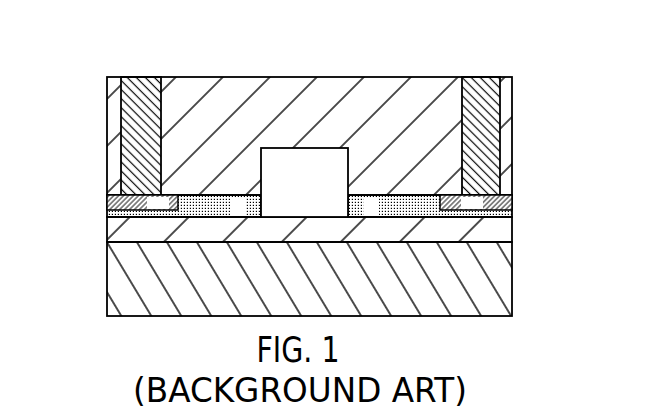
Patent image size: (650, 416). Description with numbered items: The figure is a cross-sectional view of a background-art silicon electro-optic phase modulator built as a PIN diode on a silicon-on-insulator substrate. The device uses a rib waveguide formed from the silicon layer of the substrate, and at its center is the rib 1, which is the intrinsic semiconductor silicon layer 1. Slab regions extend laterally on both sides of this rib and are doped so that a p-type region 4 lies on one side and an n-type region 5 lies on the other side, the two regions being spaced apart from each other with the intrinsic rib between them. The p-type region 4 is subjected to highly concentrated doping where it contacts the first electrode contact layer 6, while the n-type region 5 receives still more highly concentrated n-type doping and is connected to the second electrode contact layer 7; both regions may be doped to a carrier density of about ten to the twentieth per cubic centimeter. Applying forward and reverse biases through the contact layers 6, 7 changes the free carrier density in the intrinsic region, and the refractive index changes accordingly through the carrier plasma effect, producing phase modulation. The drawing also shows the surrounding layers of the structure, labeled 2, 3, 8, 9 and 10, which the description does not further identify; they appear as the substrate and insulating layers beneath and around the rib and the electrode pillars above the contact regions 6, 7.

The intrinsic semiconductor silicon layer 1 is at (497, 293).
The buried insulating layer 2 is at (488, 230).
The intrinsic (i) region 3 is at (338, 167).
The p-type region 4 is at (222, 207).
The n-type region 5 is at (403, 207).
The first electrode contact layer 6 is at (143, 203).
The second electrode contact layer 7 is at (503, 203).
The insulating layer 8 is at (357, 105).
The first electrode 9 is at (133, 85).
The second electrode 10 is at (485, 76).